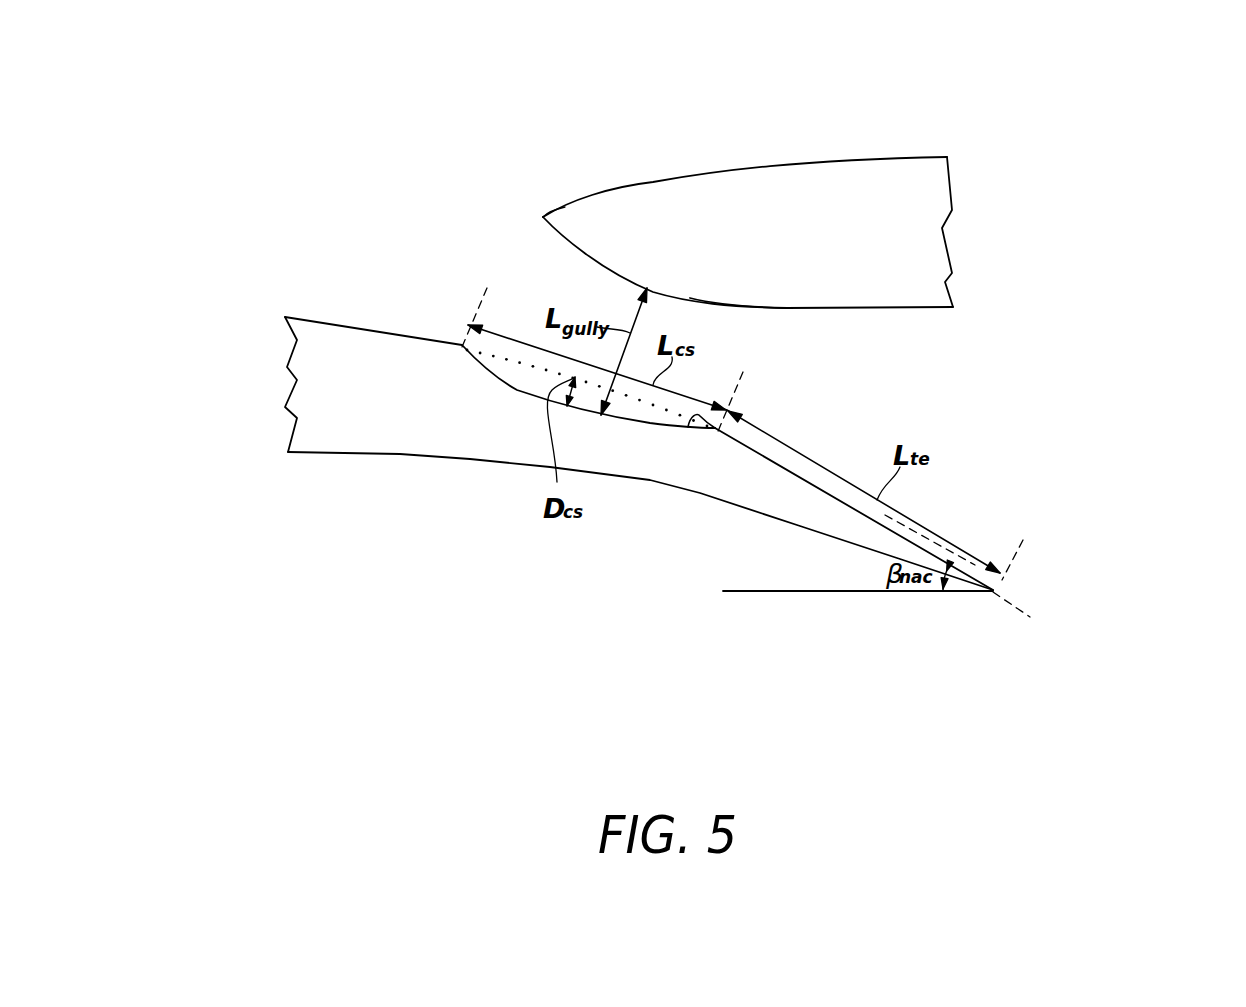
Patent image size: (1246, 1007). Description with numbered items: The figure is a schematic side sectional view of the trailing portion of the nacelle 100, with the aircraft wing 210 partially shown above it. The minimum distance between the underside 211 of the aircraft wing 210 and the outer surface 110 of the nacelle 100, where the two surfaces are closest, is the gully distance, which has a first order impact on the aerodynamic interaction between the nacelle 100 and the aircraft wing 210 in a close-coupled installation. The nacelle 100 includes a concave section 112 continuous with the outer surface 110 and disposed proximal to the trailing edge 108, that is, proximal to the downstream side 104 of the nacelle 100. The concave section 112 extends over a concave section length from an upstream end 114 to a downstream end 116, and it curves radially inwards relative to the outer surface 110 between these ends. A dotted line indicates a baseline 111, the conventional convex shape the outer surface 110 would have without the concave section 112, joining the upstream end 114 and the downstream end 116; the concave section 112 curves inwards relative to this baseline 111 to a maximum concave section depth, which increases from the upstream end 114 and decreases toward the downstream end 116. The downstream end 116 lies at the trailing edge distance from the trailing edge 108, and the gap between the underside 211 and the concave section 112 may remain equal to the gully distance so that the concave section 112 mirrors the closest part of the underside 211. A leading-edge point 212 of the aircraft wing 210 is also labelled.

The nacelle 100 is at (200, 93).
The downstream side 104 is at (1060, 646).
The trailing edge 108 is at (995, 589).
The outer surface 110 is at (358, 327).
The baseline 111 is at (643, 403).
The concave section 112 is at (517, 390).
The upstream end 114 is at (462, 345).
The downstream end 116 is at (697, 418).
The aircraft wing 210 is at (670, 197).
The underside 211 is at (720, 303).
The airfoil leading edge 212 is at (542, 217).